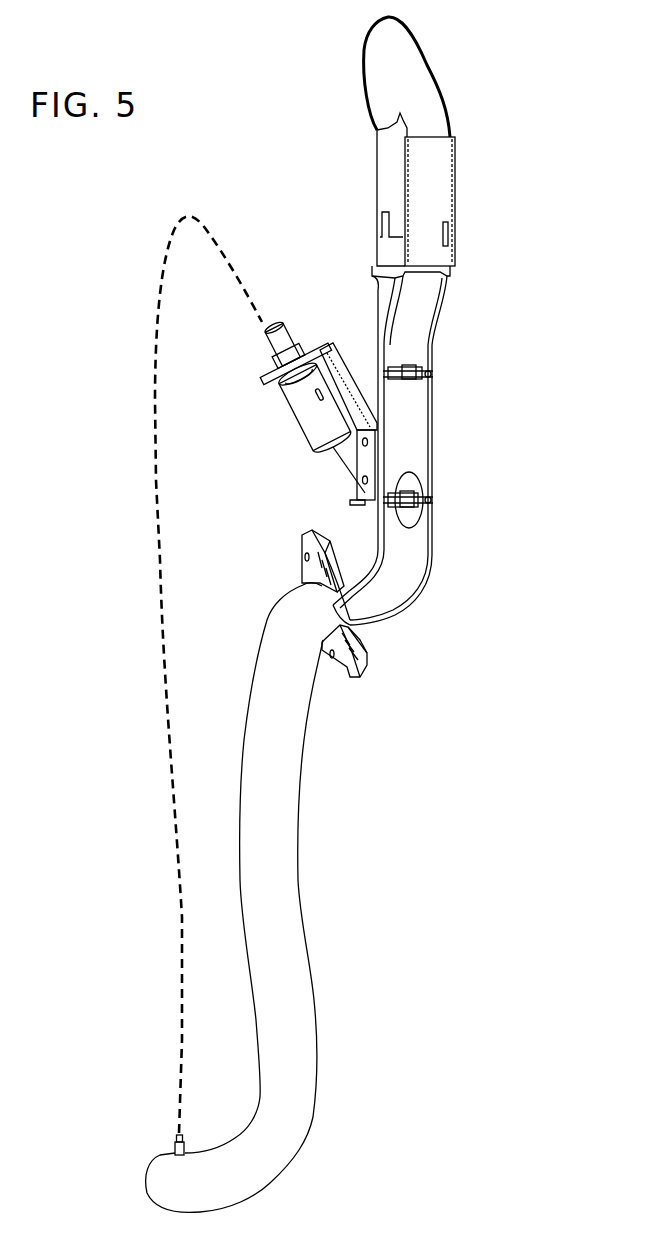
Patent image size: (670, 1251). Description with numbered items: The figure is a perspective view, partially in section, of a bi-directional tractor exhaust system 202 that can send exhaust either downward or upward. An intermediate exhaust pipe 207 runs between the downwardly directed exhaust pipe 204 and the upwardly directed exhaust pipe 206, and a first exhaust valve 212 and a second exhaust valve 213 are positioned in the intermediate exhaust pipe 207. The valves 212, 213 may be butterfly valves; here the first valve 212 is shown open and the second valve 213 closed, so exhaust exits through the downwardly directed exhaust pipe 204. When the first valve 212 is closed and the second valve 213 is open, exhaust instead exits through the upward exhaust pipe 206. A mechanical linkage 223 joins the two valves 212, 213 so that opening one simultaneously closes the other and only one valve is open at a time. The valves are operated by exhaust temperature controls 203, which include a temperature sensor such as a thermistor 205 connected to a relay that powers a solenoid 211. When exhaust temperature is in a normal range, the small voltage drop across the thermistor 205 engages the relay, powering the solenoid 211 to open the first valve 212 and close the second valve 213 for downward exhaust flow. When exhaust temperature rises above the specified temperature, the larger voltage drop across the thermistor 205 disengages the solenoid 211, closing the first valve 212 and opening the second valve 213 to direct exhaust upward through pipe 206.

The bi-directional tractor exhaust system 202 is at (453, 129).
The exhaust temperature controls 203 is at (232, 463).
The downwardly directed exhaust pipe 204 is at (269, 898).
The thermistor 205 is at (166, 685).
The upwardly directed exhaust pipe 206 is at (464, 232).
The intermediate exhaust pipe 207 is at (456, 471).
The solenoid 211 is at (273, 384).
The first exhaust valve 212 is at (466, 499).
The second exhaust valve 213 is at (466, 391).
The mechanical linkage 223 is at (344, 373).